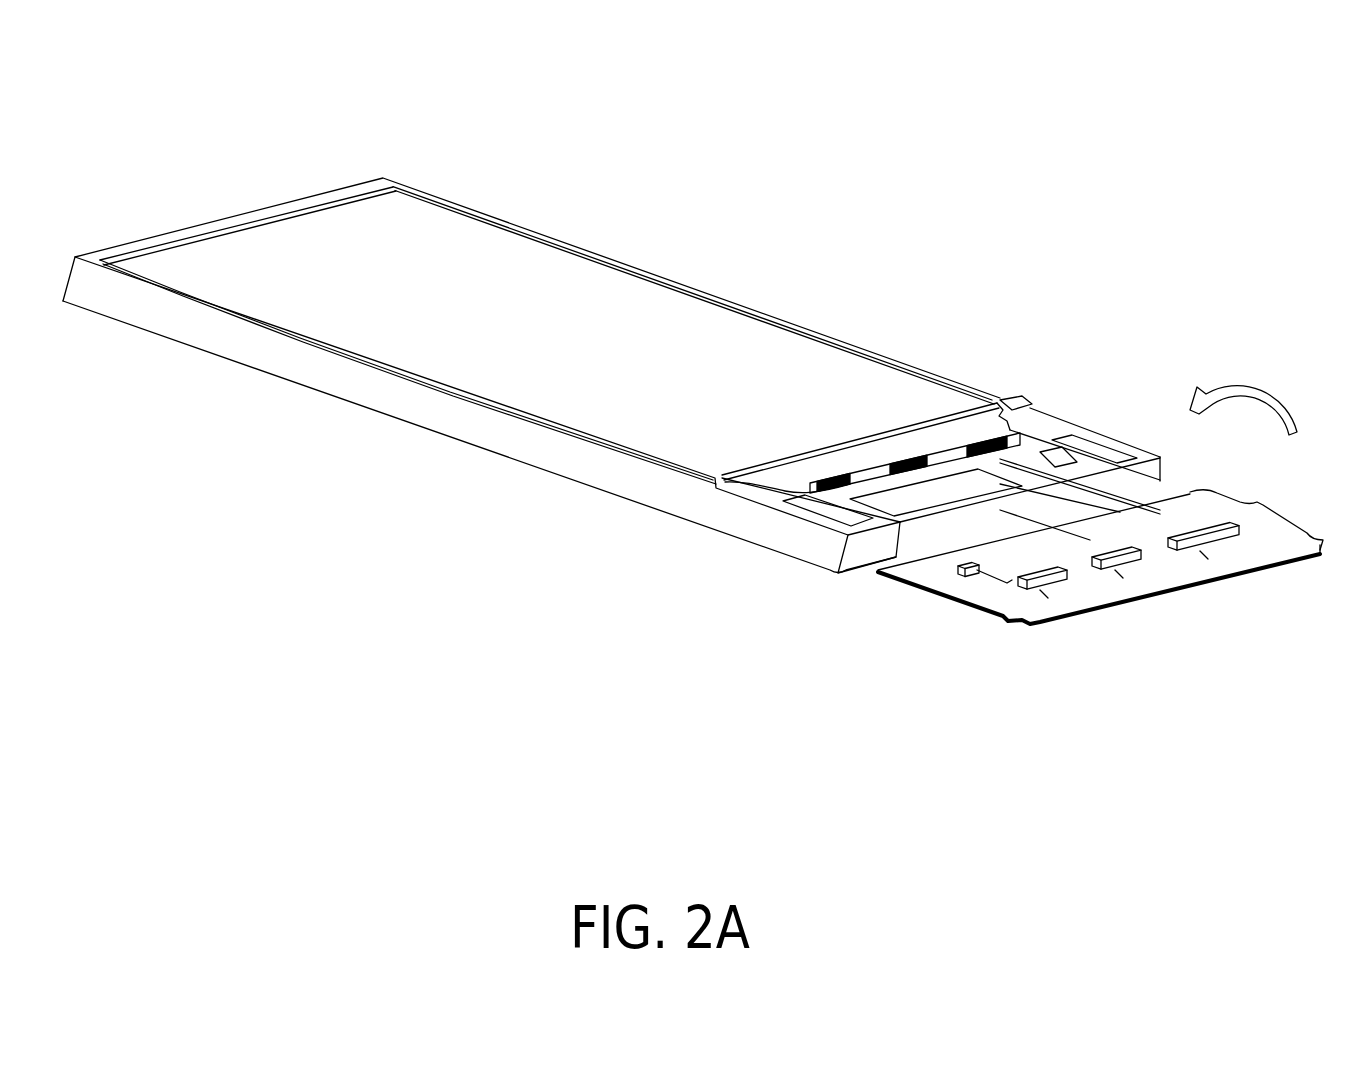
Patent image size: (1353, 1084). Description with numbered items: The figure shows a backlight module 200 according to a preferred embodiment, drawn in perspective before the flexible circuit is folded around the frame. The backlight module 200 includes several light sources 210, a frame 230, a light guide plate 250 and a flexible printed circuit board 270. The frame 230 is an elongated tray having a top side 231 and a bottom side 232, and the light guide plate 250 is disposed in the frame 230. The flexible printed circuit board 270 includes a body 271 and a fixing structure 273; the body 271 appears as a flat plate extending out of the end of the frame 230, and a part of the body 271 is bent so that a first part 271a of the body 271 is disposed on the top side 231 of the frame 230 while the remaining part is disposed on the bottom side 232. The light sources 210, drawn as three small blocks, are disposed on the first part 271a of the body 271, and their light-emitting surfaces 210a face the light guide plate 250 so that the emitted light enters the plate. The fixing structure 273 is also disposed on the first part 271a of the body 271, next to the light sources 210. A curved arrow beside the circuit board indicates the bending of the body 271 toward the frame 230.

The backlight module 200 is at (1342, 81).
The light sources 210 is at (1202, 567).
The light-emitting surfaces 210a is at (1042, 565).
The frame 230 is at (638, 487).
The top side 231 is at (700, 292).
The bottom side 232 is at (747, 550).
The light guide plate 250 is at (948, 452).
The flexible printed circuit board 270 is at (958, 753).
The body 271 is at (907, 584).
The first part 271a is at (1256, 504).
The fixing structure 273 is at (980, 580).